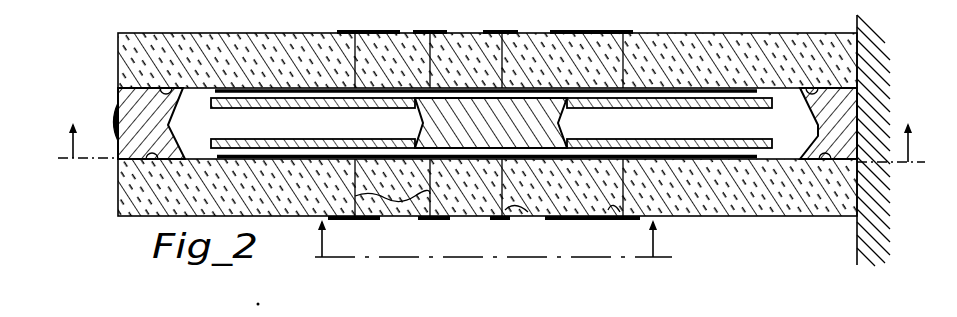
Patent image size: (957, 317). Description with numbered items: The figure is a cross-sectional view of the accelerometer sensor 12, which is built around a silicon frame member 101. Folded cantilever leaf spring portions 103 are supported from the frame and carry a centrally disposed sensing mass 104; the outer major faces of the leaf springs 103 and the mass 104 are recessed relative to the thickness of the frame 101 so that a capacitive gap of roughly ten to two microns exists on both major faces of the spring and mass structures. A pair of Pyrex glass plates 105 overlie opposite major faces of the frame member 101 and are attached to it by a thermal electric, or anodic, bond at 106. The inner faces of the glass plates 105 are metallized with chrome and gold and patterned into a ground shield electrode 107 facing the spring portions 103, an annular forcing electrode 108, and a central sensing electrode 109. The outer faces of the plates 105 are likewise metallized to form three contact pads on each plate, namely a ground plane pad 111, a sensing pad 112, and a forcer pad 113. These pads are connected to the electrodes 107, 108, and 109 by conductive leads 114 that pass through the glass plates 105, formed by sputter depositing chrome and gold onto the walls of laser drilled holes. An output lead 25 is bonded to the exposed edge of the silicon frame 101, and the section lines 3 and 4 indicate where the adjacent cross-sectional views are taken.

The accelerometer sensor 12 is at (113, 228).
The output lead 25 is at (112, 122).
The silicon frame member 101 is at (118, 99).
The folded cantilever leaf spring portions 103 is at (326, 145).
The sensing mass 104 is at (421, 122).
The Pyrex glass plates 105 is at (118, 42).
The anodic bond 106 is at (168, 88).
The ground shield electrode 107 is at (263, 90).
The annular forcing electrode 108 is at (438, 92).
The central sensing electrode 109 is at (520, 92).
The ground plane pad 111 is at (352, 30).
The sensing pad 112 is at (430, 30).
The forcer pad 113 is at (500, 30).
The conductive leads 114 is at (614, 212).
The section line 3- 3 is at (487, 159).
The section line 4- 4 is at (487, 254).